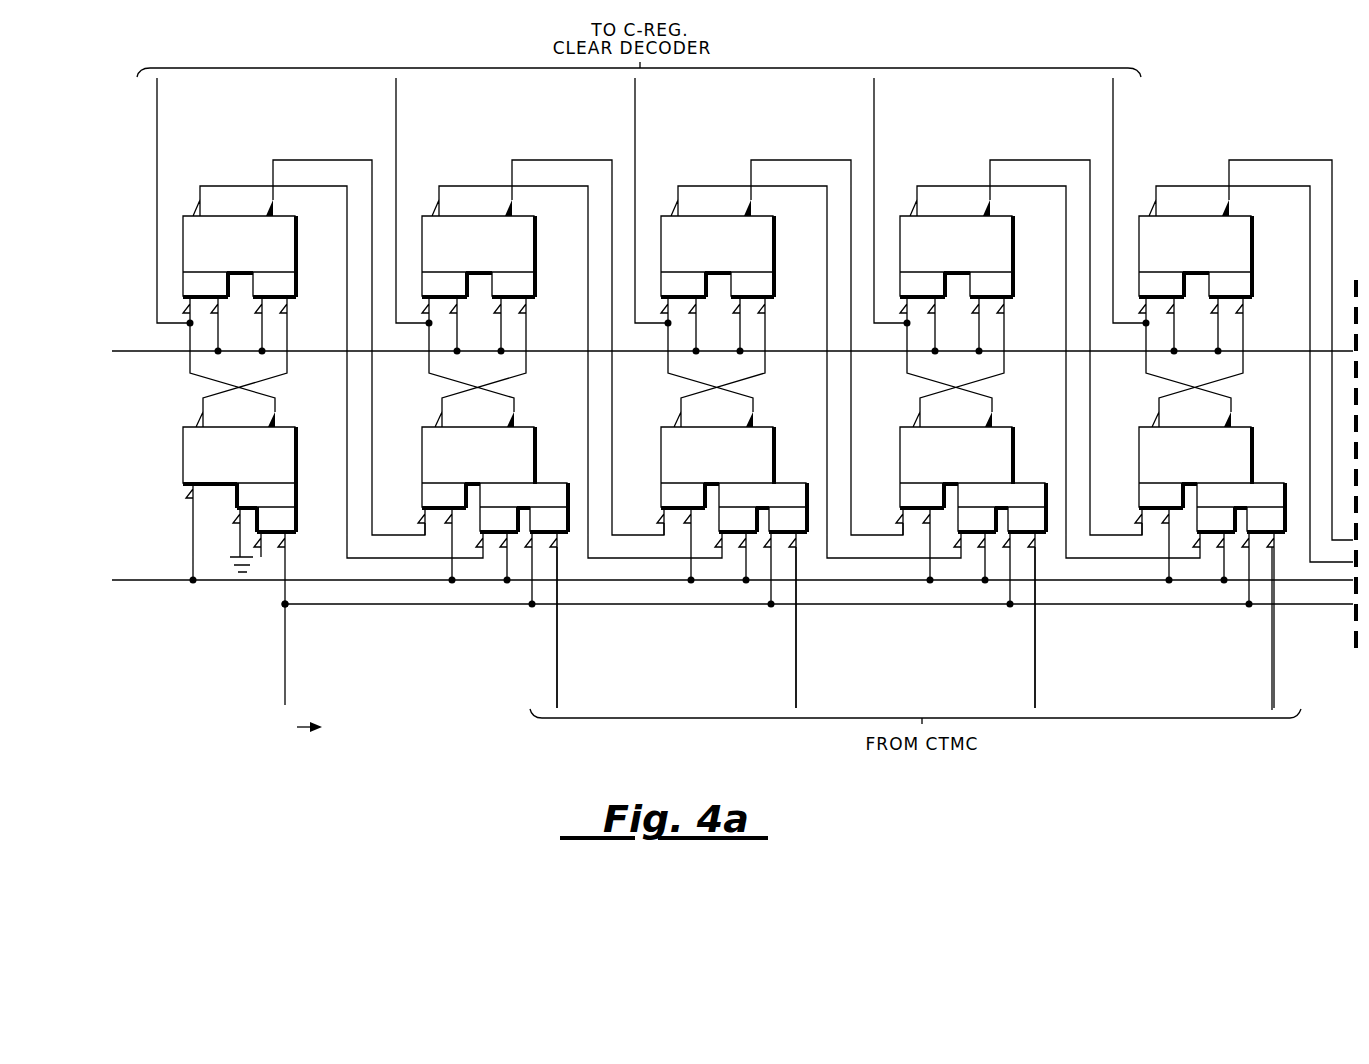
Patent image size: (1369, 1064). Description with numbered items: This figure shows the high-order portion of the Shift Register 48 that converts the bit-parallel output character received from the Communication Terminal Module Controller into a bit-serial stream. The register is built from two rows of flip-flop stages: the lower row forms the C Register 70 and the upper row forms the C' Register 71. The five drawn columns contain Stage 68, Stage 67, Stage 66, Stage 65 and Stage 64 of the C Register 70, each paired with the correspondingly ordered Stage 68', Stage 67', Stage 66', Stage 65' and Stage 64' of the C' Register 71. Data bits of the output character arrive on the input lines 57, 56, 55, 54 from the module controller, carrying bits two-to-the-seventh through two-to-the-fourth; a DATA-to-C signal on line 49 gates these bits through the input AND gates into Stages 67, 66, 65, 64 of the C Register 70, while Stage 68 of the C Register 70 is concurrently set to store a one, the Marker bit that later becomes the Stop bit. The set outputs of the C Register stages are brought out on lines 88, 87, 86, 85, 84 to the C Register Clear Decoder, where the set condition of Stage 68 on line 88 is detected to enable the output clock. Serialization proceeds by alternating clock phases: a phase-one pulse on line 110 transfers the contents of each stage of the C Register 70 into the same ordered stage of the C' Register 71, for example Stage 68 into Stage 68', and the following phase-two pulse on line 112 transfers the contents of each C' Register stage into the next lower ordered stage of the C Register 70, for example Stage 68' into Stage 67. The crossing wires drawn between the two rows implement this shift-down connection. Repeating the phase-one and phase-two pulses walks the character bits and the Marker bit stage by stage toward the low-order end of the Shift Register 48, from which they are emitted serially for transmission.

The Shift Register 48 is at (1254, 123).
The C' Register 71 is at (136, 238).
The C Register 70 is at (148, 452).
The phase-one pulse line 110 is at (161, 352).
The phase-two pulse line 112 is at (153, 580).
The set output line 88 is at (157, 98).
The set output line 87 is at (396, 98).
The set output line 86 is at (635, 98).
The set output line 85 is at (874, 98).
The set output line 84 is at (1113, 98).
The Stage 68' of C' Register 68' is at (256, 252).
The Stage 67' of C' Register 67' is at (495, 252).
The Stage 66' of C' Register 66' is at (734, 252).
The Stage 65' of C' Register 65' is at (973, 252).
The Stage 64' of C' Register 64' is at (1212, 252).
The Stage 68 of C Register 68 is at (253, 471).
The Stage 67 of C Register 67 is at (493, 471).
The Stage 66 of C Register 66 is at (732, 471).
The Stage 65 of C Register 65 is at (971, 471).
The Stage 64 of C Register 64 is at (1210, 471).
The DATA-to-C signal line 49 is at (285, 655).
The input line 57 is at (557, 661).
The input line 56 is at (796, 661).
The input line 55 is at (1035, 664).
The input line 54 is at (1272, 667).